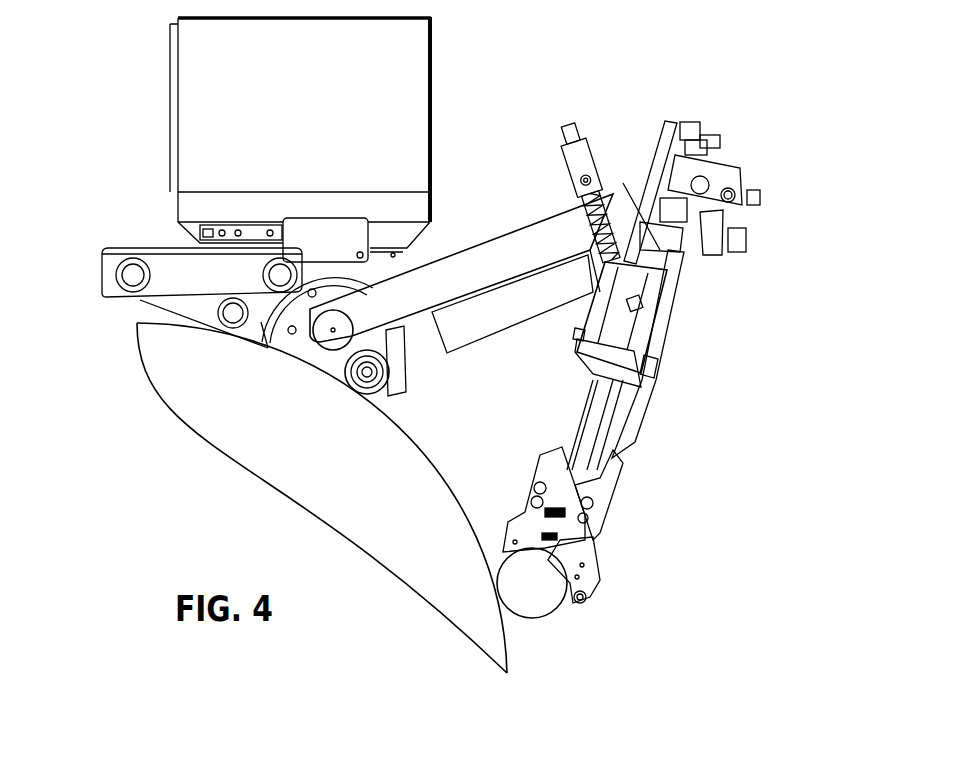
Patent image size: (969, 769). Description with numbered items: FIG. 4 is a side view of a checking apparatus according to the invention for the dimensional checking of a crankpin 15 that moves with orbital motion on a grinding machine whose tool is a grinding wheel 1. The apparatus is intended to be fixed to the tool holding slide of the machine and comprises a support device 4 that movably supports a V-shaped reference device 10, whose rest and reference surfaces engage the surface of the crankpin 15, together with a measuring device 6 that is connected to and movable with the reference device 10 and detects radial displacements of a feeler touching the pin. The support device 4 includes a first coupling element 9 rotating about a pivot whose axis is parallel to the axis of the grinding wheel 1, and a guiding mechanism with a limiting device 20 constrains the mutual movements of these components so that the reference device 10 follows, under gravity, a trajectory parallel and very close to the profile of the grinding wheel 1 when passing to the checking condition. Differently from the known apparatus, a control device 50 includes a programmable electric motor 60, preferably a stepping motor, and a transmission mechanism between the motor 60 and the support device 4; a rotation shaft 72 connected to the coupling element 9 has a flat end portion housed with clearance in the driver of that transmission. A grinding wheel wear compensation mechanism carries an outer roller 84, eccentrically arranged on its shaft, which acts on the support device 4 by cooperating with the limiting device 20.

The grinding wheel 1 is at (422, 503).
The support device 4 is at (695, 350).
The measuring device 6 is at (555, 523).
The first coupling element 9 is at (472, 267).
The reference device 10 is at (578, 555).
The crankpin 15 is at (543, 598).
The limiting device 20 is at (488, 360).
The control device 50 is at (466, 130).
The programmable electric motor 60 is at (225, 126).
The rotation shaft 72 is at (333, 330).
The outer roller 84 is at (377, 377).